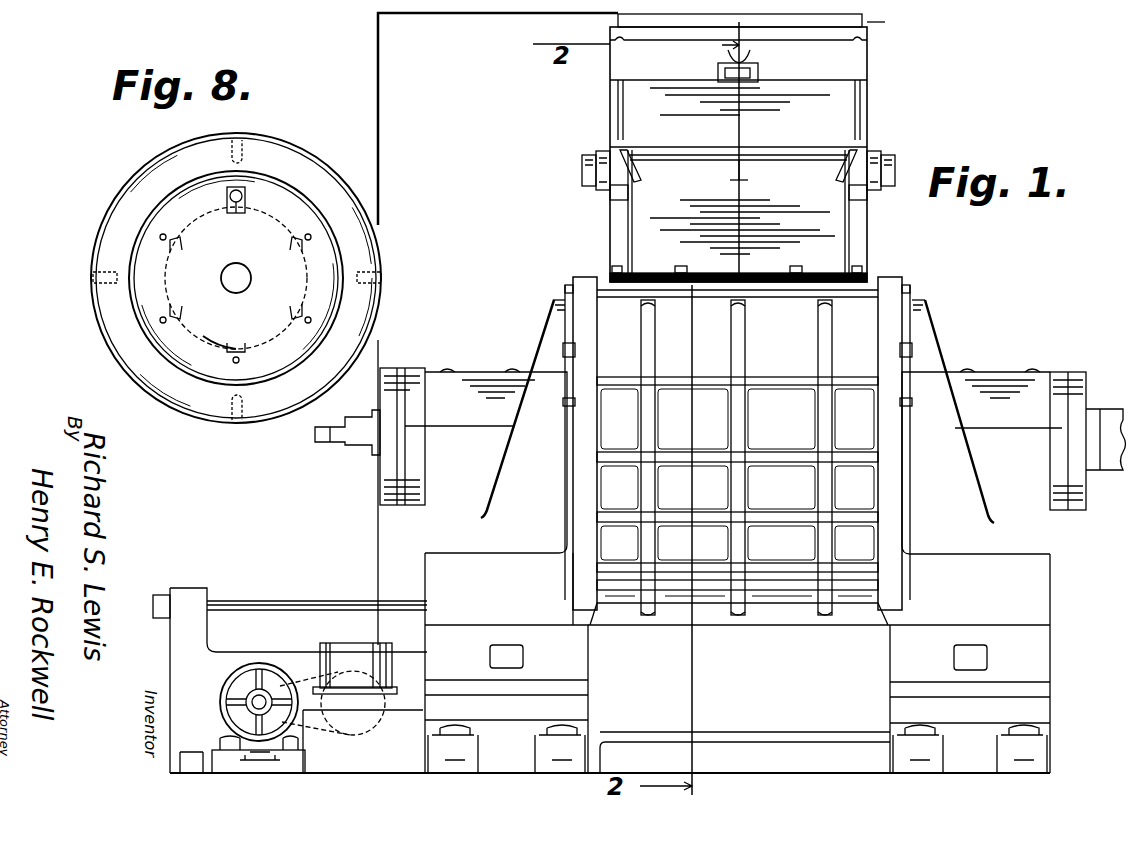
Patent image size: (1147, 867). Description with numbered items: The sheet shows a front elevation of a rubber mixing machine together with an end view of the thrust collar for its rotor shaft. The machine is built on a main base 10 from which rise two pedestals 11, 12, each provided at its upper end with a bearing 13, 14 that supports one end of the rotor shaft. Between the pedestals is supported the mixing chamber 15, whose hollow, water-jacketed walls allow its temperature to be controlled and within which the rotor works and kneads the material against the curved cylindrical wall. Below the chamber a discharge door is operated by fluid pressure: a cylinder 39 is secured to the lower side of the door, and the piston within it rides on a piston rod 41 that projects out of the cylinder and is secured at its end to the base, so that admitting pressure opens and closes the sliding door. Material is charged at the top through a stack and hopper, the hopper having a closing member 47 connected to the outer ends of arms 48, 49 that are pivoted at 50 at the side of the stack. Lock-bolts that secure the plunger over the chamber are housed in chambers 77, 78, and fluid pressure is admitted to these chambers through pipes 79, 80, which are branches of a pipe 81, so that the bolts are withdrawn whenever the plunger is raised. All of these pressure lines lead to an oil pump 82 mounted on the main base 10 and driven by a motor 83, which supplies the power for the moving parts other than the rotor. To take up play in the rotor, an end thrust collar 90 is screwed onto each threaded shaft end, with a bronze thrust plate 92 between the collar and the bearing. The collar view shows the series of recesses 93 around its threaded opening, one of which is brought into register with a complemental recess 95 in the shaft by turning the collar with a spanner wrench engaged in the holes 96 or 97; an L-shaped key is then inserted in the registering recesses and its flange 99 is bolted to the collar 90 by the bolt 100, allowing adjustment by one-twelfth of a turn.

In FIG. 1, the main base 10 is at (772, 752).
In FIG. 1, the pedestal 11 is at (1042, 608).
In FIG. 1, the pedestal 12 is at (432, 574).
In FIG. 1, the bearing 13 is at (995, 385).
In FIG. 1, the bearing 14 is at (466, 385).
In FIG. 1, the mixing chamber 15 is at (787, 346).
In FIG. 1, the cylinder 39 is at (660, 618).
In FIG. 1, the piston rod 41 is at (250, 604).
In FIG. 1, the closing member 47 is at (812, 100).
In FIG. 1, the arm 48 is at (622, 152).
In FIG. 1, the arm 49 is at (855, 152).
In FIG. 1, the pivot 50 is at (612, 190).
In FIG. 1, the chamber 77 is at (582, 168).
In FIG. 1, the chamber 78 is at (895, 168).
In FIG. 1, the pipe 79 is at (618, 20).
In FIG. 1, the pipe 80 is at (891, 22).
In FIG. 1, the pipe 81 is at (380, 135).
In FIG. 1, the oil pump 82 is at (335, 644).
In FIG. 1, the motor 83 is at (226, 695).
In FIG. 8, the end thrust collar 90 is at (318, 170).
In FIG. 1, the end thrust collar 90 is at (390, 372).
In FIG. 1, the thrust plate 92 is at (408, 372).
In FIG. 8, the recess 93 is at (297, 317).
In FIG. 8, the recess 95 is at (203, 335).
In FIG. 8, the hole 96 is at (251, 136).
In FIG. 8, the hole 97 is at (227, 420).
In FIG. 8, the flange 99 is at (236, 212).
In FIG. 8, the bolt 100 is at (243, 188).